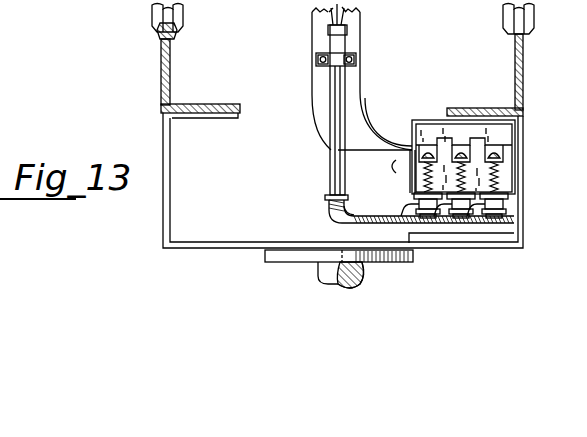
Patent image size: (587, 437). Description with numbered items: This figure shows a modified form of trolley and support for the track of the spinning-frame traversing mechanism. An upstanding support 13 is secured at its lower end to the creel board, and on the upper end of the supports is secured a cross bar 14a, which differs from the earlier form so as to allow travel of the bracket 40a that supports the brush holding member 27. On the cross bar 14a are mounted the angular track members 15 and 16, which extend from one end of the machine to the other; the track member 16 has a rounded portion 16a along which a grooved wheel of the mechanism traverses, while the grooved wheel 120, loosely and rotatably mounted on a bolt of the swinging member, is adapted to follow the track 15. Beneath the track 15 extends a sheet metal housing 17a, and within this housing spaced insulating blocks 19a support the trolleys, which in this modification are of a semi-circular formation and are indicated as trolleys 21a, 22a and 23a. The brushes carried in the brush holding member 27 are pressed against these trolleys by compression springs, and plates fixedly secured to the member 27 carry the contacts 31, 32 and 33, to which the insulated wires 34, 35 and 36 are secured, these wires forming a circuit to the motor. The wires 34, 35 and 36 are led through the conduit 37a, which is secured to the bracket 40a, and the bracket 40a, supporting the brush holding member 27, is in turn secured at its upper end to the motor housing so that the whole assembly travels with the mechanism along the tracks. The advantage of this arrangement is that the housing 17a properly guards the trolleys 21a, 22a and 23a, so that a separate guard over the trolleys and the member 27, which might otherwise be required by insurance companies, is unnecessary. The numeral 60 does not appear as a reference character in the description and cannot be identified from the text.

The upstanding support 13 is at (362, 271).
The cross bar 14a is at (212, 216).
The angular track member 15 is at (523, 63).
The angular track member 16 is at (160, 56).
The rounded portion of track 16a is at (159, 36).
The sheet metal housing 17a is at (422, 121).
The insulating block 19a is at (432, 128).
The trolley 21a is at (497, 151).
The trolley 22a is at (461, 150).
The trolley 23a is at (408, 142).
The insulating block 27 is at (421, 183).
The contact 31 is at (506, 201).
The contact 32 is at (471, 218).
The contact 33 is at (418, 201).
The insulated wire 34 is at (396, 225).
The insulated wire 35 is at (451, 216).
The insulated wire 36 is at (354, 212).
The conduit 37a is at (331, 143).
The bracket 40a is at (354, 44).
The left pulley 60 is at (166, 12).
The grooved wheel 120 is at (527, 19).